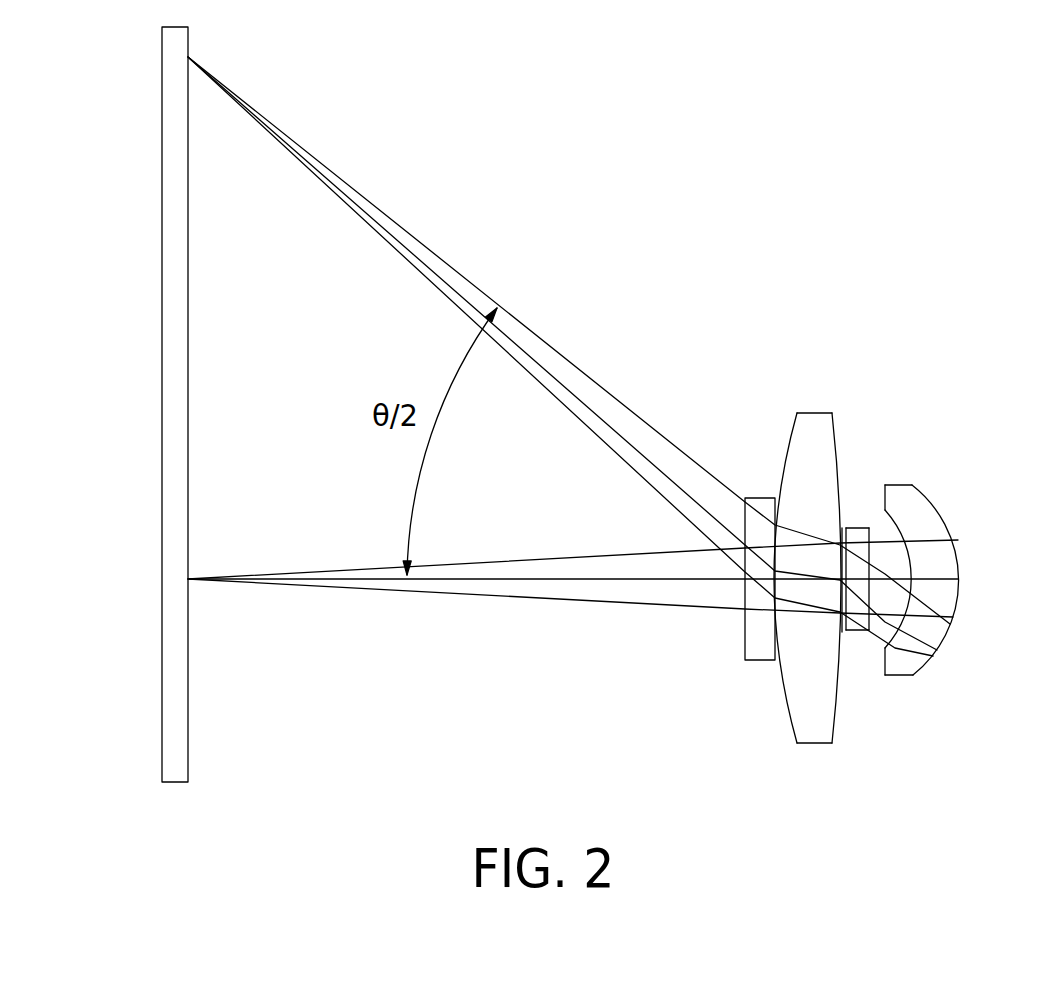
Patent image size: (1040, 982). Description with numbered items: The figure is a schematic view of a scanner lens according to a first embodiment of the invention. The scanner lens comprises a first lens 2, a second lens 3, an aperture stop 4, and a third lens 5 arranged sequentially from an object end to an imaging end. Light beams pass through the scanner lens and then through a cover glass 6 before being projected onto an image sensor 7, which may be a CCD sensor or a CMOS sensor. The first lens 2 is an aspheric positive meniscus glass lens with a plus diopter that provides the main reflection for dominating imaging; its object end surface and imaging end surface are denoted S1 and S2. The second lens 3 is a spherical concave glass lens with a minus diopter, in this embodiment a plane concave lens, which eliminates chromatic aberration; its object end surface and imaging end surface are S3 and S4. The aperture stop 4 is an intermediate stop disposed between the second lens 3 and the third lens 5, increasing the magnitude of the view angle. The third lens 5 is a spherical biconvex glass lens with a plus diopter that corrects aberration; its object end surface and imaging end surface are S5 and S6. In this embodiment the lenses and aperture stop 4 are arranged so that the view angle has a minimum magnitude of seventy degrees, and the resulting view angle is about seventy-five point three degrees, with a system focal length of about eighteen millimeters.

The first lens 2 is at (950, 559).
The second lens 3 is at (876, 541).
The aperture stop 4 is at (842, 632).
The third lens 5 is at (793, 565).
The cover glass 6 is at (758, 650).
The image sensor 7 is at (188, 683).
The object end surface of the first lens S1 is at (943, 518).
The imaging end surface of the first lens S2 is at (897, 525).
The object end surface of the second lens S3 is at (869, 528).
The imaging end surface of the second lens S4 is at (846, 528).
The object end surface of the third lens S5 is at (832, 430).
The imaging end surface of the third lens S6 is at (790, 430).